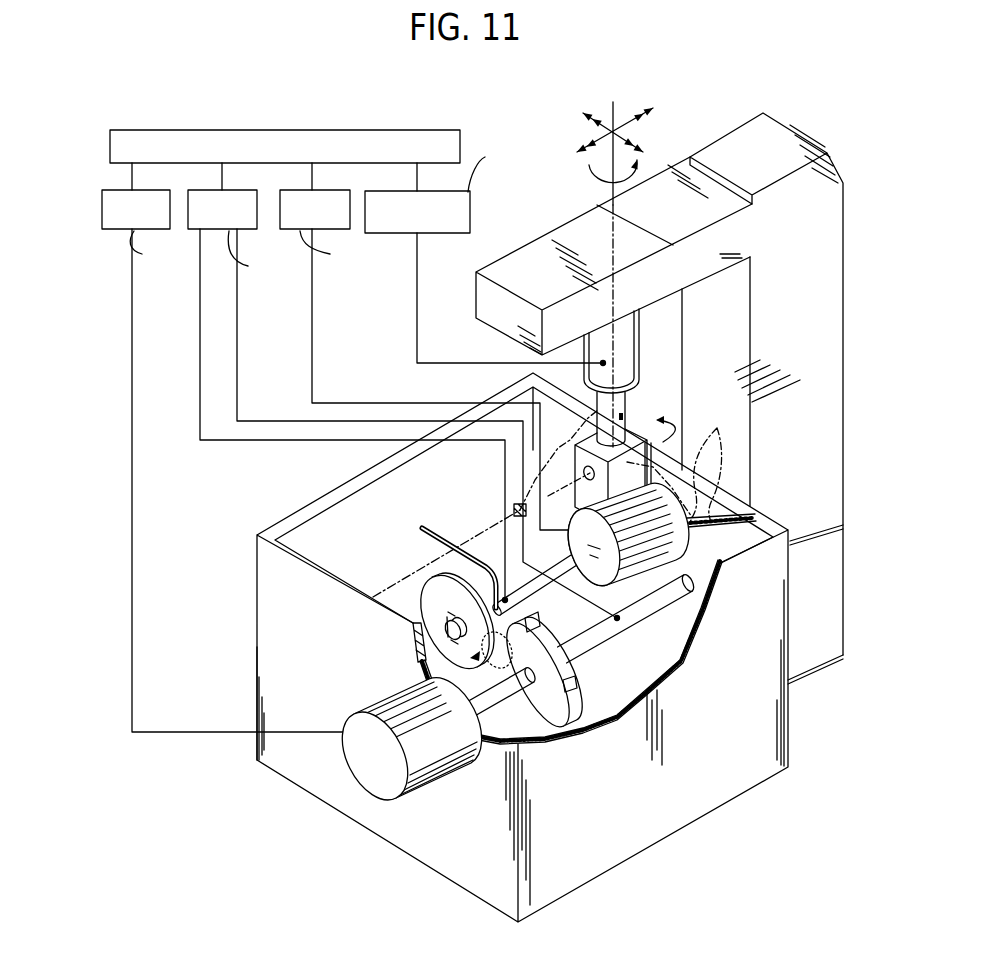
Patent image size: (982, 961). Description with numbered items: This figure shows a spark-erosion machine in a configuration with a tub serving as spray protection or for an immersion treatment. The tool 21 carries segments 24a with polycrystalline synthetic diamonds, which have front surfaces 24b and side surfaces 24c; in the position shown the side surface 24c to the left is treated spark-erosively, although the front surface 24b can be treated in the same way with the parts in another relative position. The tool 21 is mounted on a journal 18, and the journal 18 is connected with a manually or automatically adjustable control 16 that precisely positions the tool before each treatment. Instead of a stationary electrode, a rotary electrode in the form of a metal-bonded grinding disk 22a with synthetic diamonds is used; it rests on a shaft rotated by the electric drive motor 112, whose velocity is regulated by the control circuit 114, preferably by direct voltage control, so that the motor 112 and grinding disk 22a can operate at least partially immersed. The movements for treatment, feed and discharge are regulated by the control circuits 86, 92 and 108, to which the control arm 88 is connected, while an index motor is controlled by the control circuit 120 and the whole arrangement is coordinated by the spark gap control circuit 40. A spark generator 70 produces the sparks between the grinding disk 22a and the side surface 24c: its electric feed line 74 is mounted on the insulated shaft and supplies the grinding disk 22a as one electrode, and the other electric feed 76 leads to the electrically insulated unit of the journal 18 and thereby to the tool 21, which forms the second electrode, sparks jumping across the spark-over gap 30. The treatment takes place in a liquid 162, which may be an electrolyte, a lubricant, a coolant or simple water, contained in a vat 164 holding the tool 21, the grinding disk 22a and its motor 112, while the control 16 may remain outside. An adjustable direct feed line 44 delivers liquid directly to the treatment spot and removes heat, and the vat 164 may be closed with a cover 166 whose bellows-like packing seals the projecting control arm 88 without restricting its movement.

The spark gap control circuit 40 is at (283, 157).
The control circuit 120 is at (145, 221).
The spark generator 70 is at (228, 221).
The control circuit 114 is at (327, 221).
The control circuit 86 is at (485, 256).
The control circuit 92 is at (485, 256).
The control circuit 108 is at (458, 222).
The control arm 88 is at (624, 357).
The electric feed 76 is at (281, 419).
The electric feed line 74 is at (257, 442).
The adjustable direct feed line 44 is at (427, 528).
The grinding disk 22a is at (437, 590).
The spark-over gap 30 is at (470, 660).
The control 16 is at (378, 707).
The journal 18 is at (488, 690).
The tool 21 is at (542, 705).
The segments 24a is at (570, 705).
The front surfaces 24b is at (567, 640).
The side surfaces 24c is at (574, 683).
The drive motor 112 is at (668, 535).
The liquid 162 is at (700, 584).
The vat 164 is at (718, 792).
The cover 166 is at (721, 464).